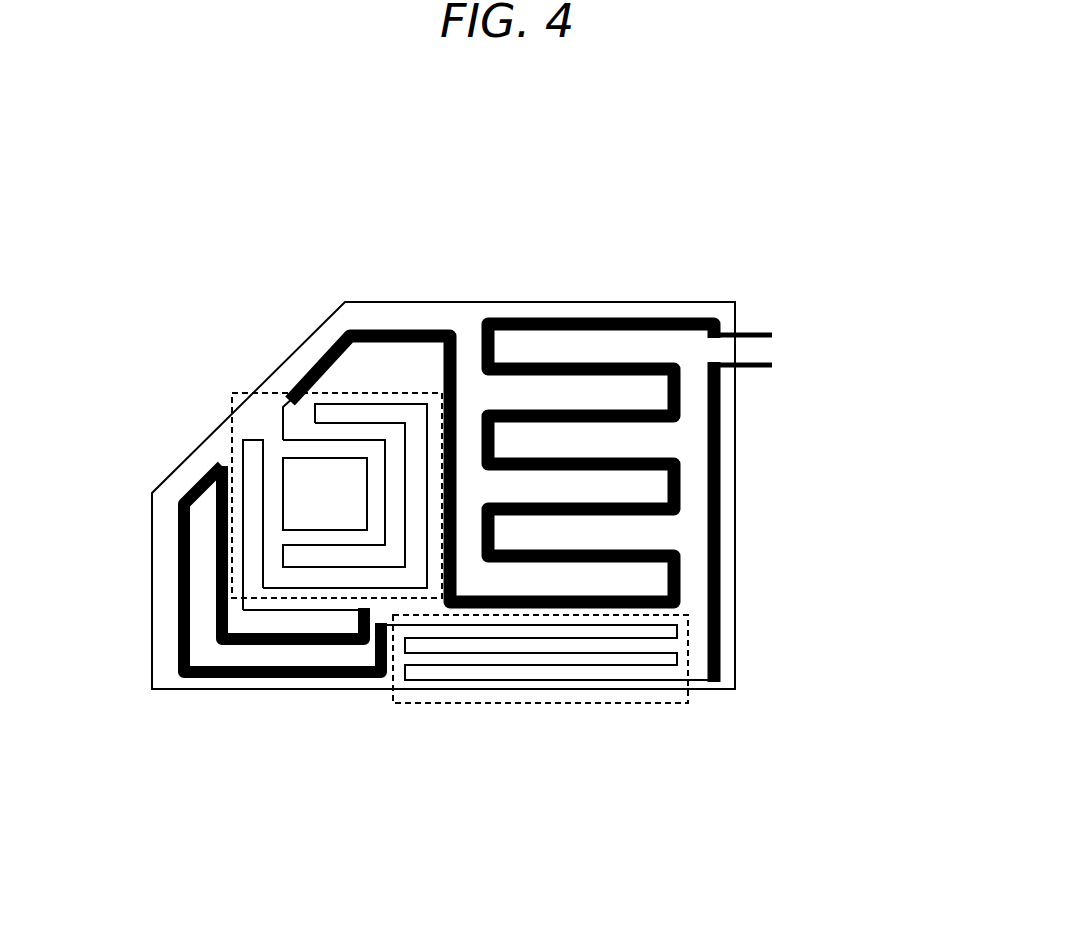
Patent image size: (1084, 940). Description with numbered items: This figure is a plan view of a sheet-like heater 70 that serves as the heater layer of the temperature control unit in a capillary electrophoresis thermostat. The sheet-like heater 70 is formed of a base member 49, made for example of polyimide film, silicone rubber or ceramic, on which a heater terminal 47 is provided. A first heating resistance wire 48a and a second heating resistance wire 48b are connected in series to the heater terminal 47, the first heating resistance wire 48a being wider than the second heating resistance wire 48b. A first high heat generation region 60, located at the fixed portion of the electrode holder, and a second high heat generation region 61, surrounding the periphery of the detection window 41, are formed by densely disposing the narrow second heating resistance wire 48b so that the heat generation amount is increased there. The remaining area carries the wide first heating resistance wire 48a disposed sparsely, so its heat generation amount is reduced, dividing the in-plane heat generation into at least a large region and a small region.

The sheet-like heater 70 is at (778, 258).
The base member 49 is at (454, 324).
The heater terminal 47 is at (755, 370).
The first heating resistance wire 48a is at (720, 613).
The second heating resistance wire 48b is at (243, 440).
The second high heat generation region 61 is at (232, 420).
The first high heat generation region 60 is at (633, 707).
The detection window 41 is at (315, 535).